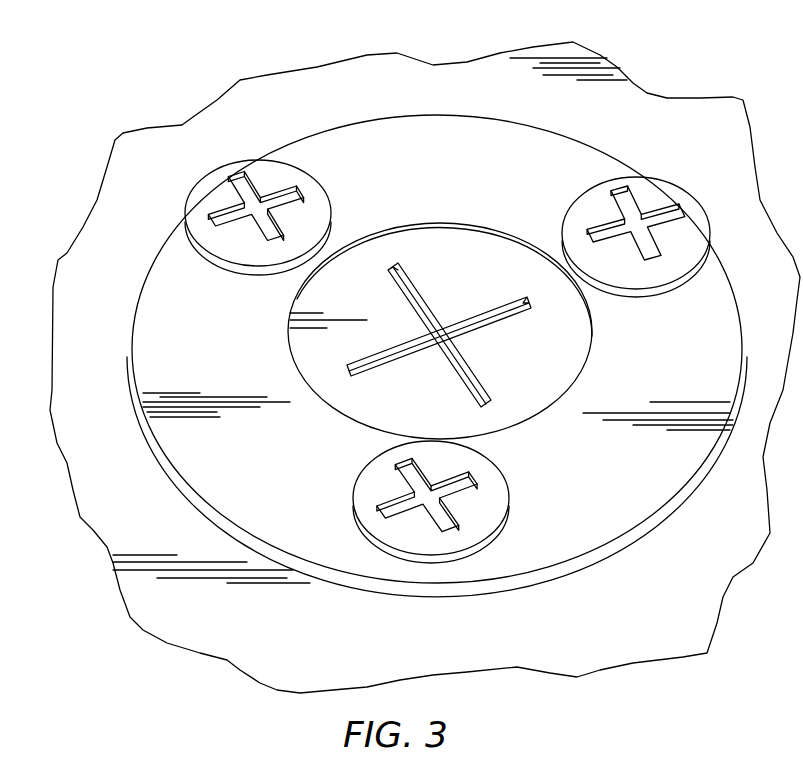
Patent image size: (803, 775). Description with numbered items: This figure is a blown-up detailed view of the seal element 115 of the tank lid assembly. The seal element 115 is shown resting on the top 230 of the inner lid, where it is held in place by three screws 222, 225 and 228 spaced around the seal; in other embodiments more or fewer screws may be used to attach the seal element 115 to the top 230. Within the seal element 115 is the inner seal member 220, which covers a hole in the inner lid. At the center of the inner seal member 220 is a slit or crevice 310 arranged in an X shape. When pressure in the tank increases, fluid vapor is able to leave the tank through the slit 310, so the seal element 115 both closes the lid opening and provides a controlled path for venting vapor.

The seal element 115 is at (538, 166).
The inner seal member 220 is at (455, 248).
The screw 222 is at (252, 168).
The screw 225 is at (500, 497).
The screw 228 is at (690, 205).
The top 230 is at (665, 142).
The slit 310 is at (422, 309).